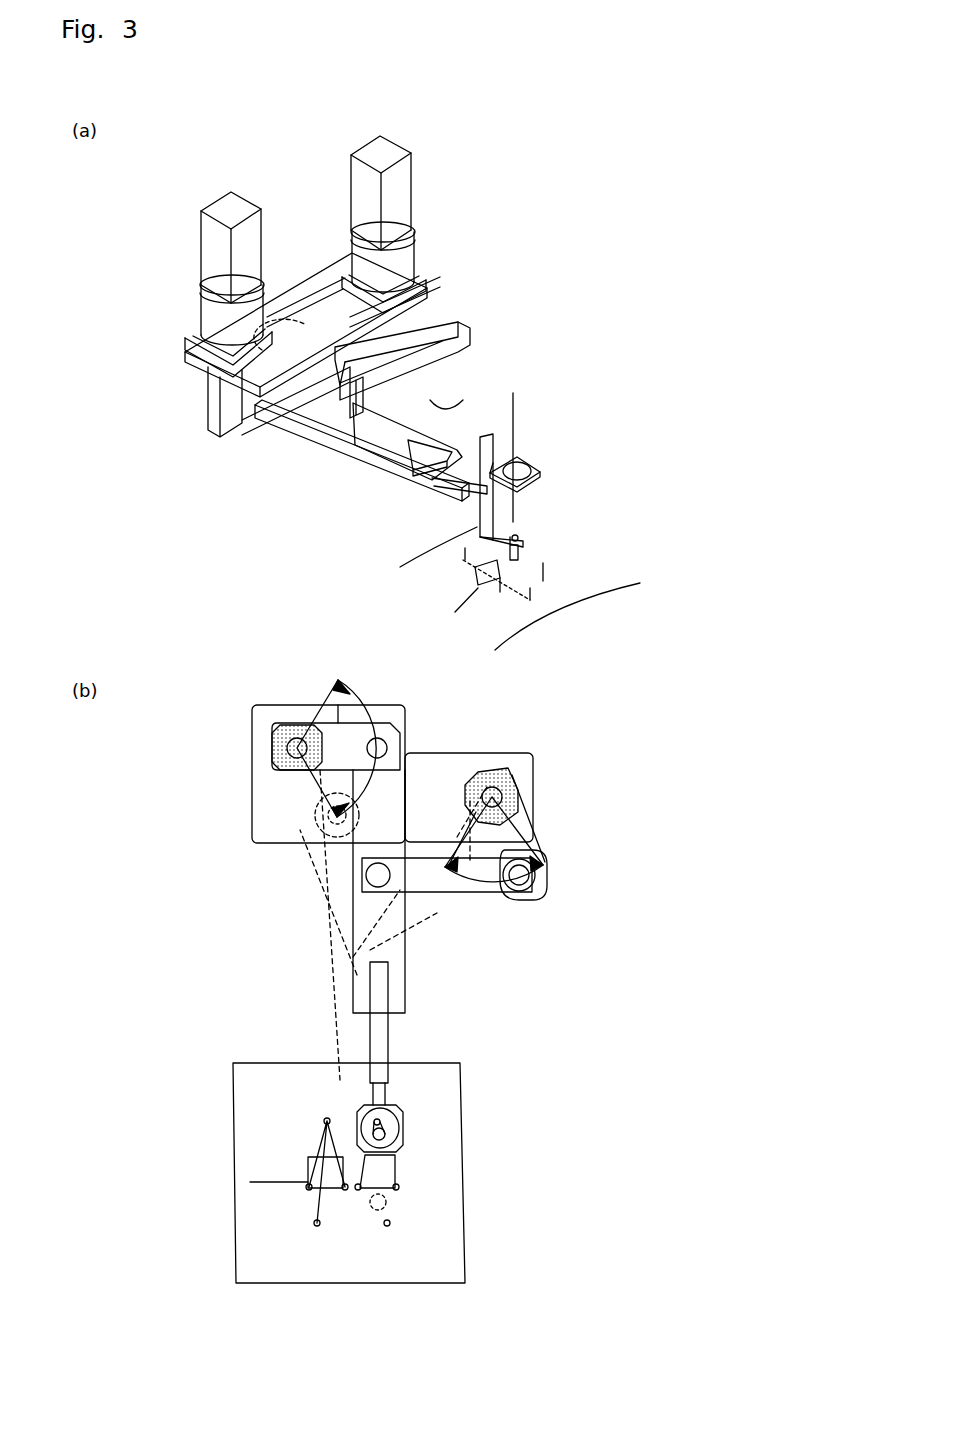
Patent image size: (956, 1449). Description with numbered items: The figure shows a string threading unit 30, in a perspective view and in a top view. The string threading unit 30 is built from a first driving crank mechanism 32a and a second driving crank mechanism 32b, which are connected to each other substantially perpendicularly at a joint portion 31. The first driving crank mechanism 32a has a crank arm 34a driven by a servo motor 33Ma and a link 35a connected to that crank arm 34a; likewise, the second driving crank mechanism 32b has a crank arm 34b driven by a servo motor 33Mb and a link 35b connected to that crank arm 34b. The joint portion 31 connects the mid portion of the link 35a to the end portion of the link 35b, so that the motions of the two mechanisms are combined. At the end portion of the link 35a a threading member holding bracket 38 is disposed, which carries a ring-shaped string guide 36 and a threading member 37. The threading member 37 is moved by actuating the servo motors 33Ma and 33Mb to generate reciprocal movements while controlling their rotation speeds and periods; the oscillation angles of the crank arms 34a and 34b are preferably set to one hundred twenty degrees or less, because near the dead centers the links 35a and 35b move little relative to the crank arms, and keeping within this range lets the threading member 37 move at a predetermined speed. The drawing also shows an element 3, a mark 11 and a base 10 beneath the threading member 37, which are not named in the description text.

The string threading unit 30 is at (508, 142).
The servo motor 33Ma is at (205, 248).
The servo motor 33Mb is at (403, 188).
The crank arm 34a is at (262, 440).
The crank arm 34b is at (427, 318).
The first driving crank mechanism 32a is at (352, 512).
The second driving crank mechanism 32b is at (530, 283).
The link 35a is at (387, 453).
The link 35b is at (440, 412).
The joint portion 31 is at (336, 432).
The threading member holding bracket 38 is at (458, 493).
The ring-shaped string guide 36 is at (541, 466).
The threading member 37 is at (525, 540).
The electronic component 3 is at (514, 425).
The mounting position mark 11 is at (545, 571).
The substrate 10 is at (570, 600).